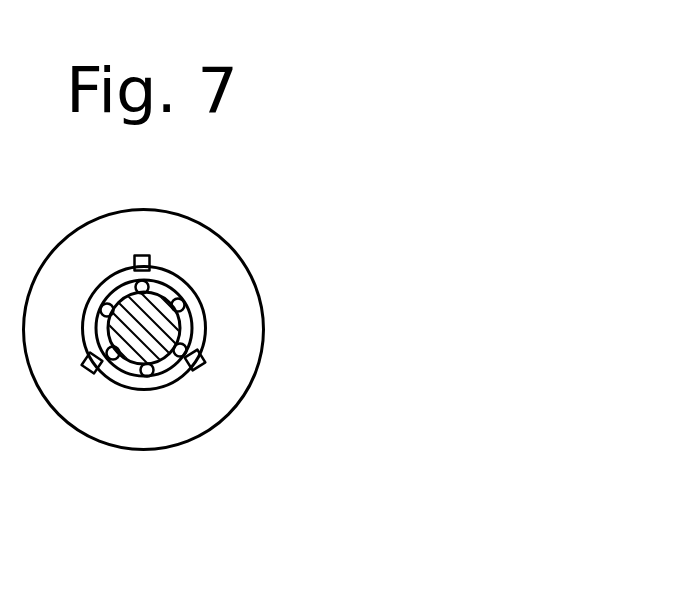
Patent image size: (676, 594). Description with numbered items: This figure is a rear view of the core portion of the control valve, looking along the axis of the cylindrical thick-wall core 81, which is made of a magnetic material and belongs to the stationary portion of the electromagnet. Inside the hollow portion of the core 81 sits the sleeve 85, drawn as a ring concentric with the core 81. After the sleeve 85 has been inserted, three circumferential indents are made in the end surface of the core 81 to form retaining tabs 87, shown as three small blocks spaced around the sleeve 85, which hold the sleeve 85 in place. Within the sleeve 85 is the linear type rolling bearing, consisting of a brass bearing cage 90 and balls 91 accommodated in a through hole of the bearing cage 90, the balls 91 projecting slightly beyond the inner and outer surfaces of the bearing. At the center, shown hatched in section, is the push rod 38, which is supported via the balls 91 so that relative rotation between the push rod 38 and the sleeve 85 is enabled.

The core 81 is at (210, 255).
The sleeve 85 is at (197, 293).
The push rod 38 is at (185, 372).
The bearing cage 90 is at (184, 331).
The balls 91 is at (148, 373).
The retaining tabs 87 is at (207, 360).